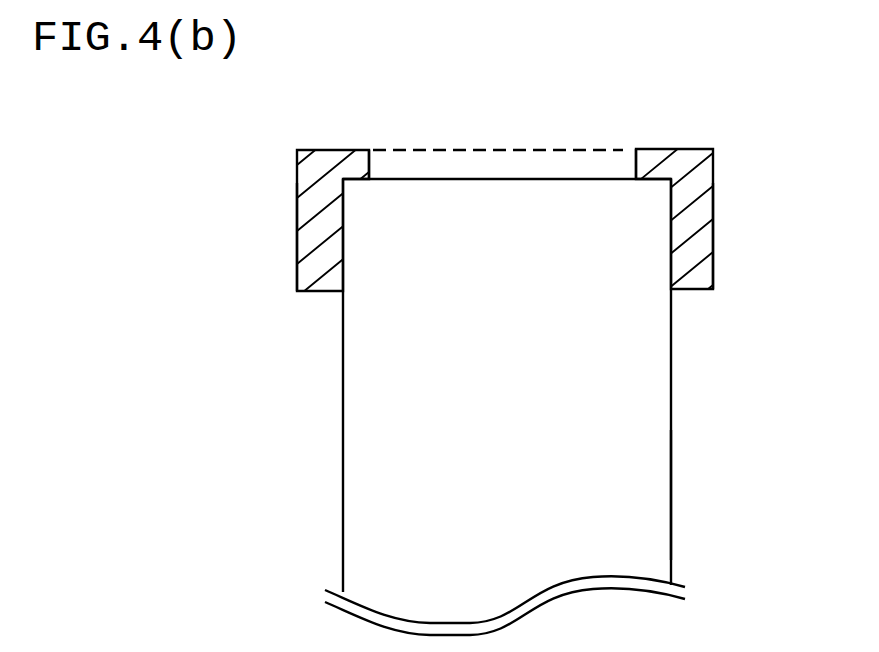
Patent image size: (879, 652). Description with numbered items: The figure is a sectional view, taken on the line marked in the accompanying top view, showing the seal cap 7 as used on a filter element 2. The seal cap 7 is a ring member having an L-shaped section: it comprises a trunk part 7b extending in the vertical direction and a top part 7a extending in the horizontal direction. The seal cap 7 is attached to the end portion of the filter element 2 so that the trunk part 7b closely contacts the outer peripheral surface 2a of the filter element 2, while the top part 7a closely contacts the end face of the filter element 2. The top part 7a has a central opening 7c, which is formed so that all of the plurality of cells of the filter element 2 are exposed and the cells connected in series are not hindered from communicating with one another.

The filter element 2 is at (647, 400).
The outer peripheral surface 2a is at (676, 503).
The seal cap 7 is at (668, 160).
The top part 7a is at (757, 143).
The trunk part 7b is at (757, 183).
The central opening 7c is at (472, 138).